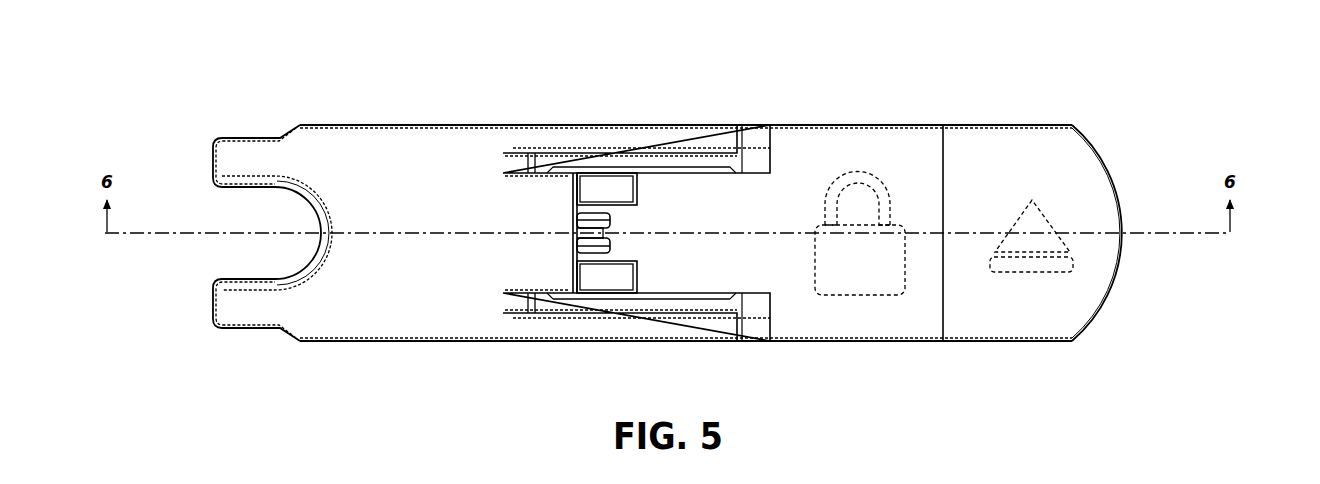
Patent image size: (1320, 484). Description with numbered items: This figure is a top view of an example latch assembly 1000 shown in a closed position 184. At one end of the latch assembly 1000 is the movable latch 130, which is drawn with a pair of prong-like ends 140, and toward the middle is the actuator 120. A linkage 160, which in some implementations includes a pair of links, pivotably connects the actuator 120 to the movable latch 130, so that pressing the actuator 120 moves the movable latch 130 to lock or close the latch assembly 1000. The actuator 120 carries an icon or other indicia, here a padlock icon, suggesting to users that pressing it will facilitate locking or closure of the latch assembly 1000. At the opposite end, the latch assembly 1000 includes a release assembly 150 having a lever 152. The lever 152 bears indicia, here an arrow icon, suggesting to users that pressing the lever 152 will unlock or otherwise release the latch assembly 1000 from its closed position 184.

The latch assembly 1000 is at (1178, 111).
The actuator 120 is at (693, 209).
The movable latch 130 is at (393, 199).
The prongs 140 is at (202, 160).
The release assembly 150 is at (1115, 159).
The lever 152 is at (1013, 178).
The linkage 160 is at (680, 162).
The closed position 184 is at (598, 98).